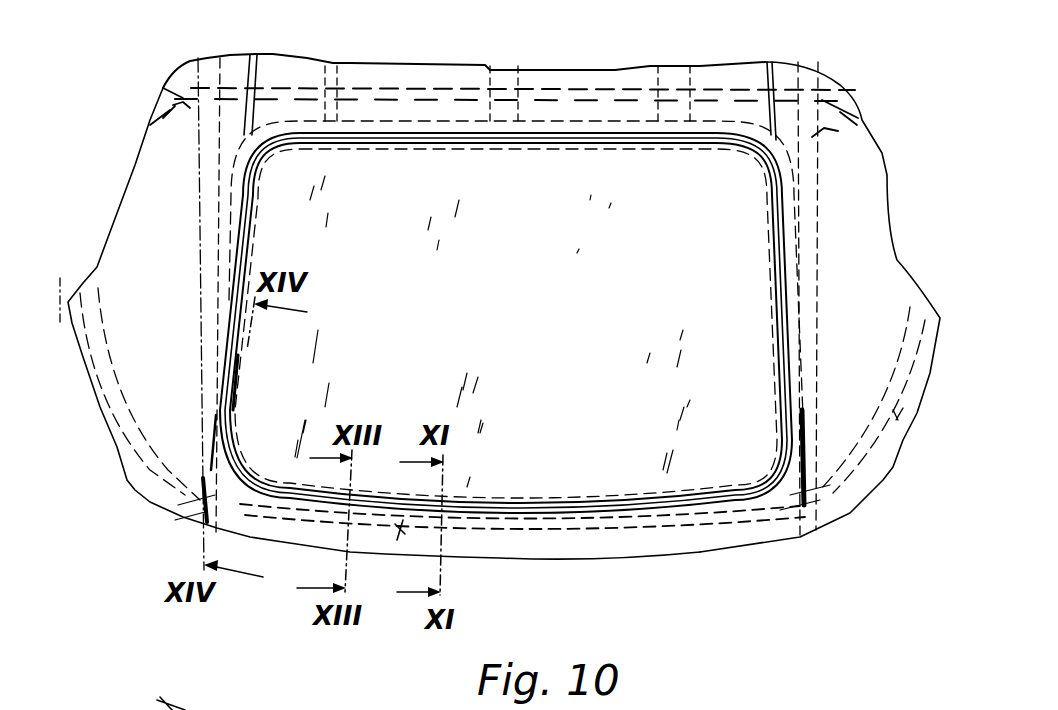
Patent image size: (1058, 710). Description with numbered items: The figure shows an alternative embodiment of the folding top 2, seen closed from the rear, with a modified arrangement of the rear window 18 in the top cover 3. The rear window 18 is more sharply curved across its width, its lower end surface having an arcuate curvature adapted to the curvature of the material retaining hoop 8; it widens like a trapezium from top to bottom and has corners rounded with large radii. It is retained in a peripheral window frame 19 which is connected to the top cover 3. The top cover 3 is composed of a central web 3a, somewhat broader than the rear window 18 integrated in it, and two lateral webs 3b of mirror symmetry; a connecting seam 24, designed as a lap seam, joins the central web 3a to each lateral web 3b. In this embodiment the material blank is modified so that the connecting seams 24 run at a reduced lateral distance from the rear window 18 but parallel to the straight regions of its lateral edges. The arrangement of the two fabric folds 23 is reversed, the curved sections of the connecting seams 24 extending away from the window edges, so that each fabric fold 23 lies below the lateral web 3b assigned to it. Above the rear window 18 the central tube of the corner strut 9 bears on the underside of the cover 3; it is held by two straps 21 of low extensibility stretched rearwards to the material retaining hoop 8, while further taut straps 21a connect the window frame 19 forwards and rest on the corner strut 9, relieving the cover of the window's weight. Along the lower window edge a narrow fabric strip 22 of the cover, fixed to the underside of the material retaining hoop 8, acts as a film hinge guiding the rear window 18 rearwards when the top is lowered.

The folding top 2 is at (910, 205).
The top cover 3 is at (716, 58).
The central web 3a is at (395, 68).
The lateral web 3b is at (147, 197).
The material retaining hoop 8 is at (899, 428).
The corner strut 9 is at (584, 96).
The rear window 18 is at (577, 470).
The window frame 19 is at (390, 555).
The strap 21 is at (162, 88).
The strap 21a is at (337, 62).
The fabric strip 22 is at (527, 522).
The fabric fold 23 is at (168, 528).
The connecting seam 24 is at (252, 70).